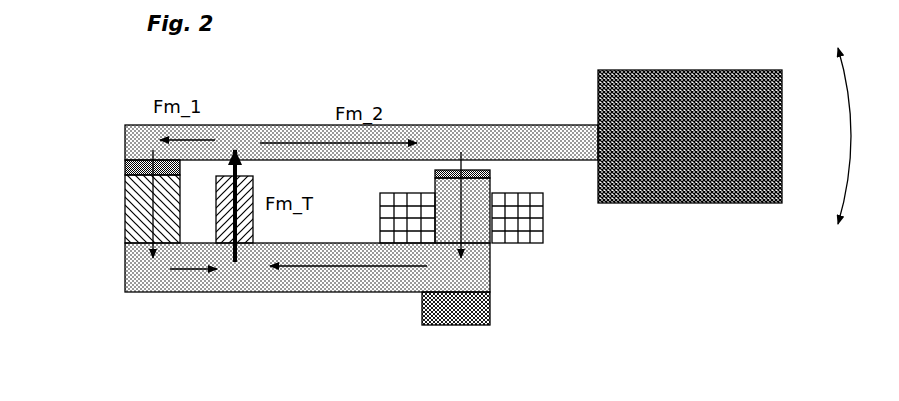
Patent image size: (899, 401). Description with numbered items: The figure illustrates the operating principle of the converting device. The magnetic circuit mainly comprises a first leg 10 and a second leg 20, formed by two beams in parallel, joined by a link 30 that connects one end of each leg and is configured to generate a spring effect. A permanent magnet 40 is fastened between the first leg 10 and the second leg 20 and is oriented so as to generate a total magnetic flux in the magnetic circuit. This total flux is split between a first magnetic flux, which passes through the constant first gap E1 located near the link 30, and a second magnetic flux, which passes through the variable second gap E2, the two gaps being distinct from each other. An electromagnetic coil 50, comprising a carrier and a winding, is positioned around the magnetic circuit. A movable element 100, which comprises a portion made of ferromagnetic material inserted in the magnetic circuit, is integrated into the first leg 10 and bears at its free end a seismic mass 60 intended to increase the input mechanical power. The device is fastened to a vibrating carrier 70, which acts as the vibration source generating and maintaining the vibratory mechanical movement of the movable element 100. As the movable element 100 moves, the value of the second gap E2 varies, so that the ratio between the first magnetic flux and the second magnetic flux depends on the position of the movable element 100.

The first leg 10 is at (277, 130).
The second leg 20 is at (380, 288).
The link 30 is at (135, 213).
The permanent magnet 40 is at (250, 230).
The electromagnetic coil 50 is at (533, 232).
The seismic mass 60 is at (677, 80).
The vibrating carrier 70 is at (457, 315).
The movable element 100 is at (323, 203).
The first gap E1 is at (137, 168).
The second gap E2 is at (475, 165).